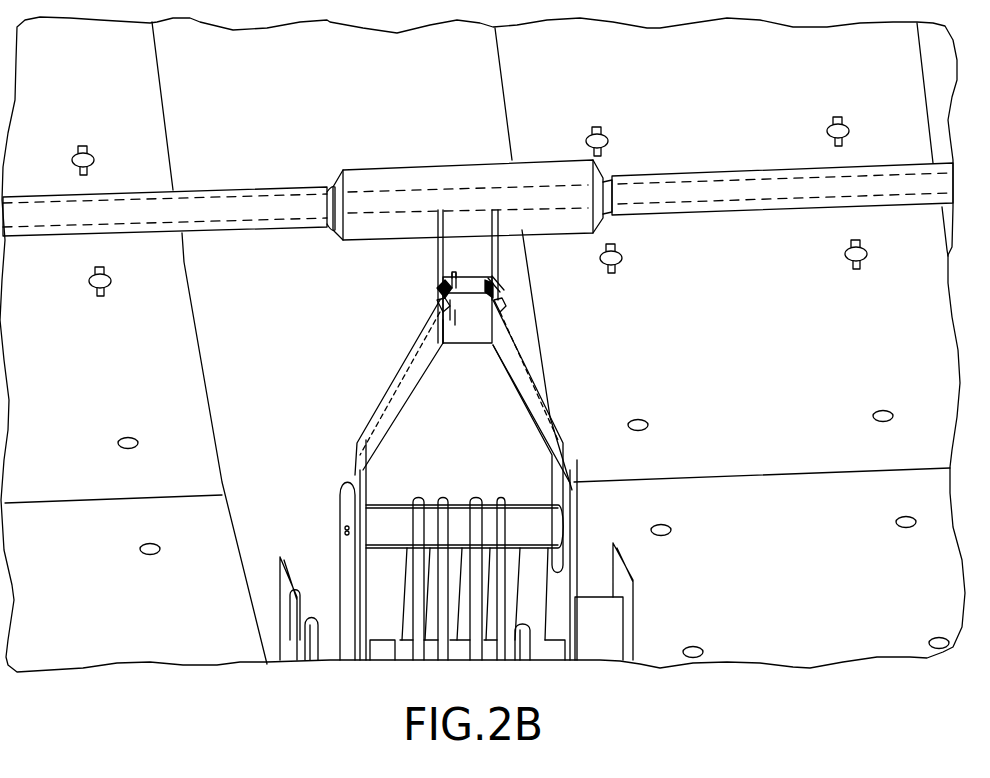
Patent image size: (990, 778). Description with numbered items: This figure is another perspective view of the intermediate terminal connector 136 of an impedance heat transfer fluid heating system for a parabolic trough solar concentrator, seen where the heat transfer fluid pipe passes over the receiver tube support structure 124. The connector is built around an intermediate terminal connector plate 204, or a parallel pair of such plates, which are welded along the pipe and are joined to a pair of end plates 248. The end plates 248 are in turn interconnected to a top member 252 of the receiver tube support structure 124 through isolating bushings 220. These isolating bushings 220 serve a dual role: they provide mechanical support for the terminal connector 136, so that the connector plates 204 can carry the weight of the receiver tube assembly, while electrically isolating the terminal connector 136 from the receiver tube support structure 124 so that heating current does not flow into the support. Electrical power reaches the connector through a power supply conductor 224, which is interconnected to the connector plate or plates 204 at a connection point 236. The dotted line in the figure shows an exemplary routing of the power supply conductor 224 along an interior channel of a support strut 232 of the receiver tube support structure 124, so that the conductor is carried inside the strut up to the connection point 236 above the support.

The receiver tube support structure 124 is at (457, 435).
The intermediate terminal connector 136 is at (499, 276).
The intermediate terminal connector plate 204 is at (495, 258).
The isolating bushings 220 is at (437, 305).
The power supply conductor 224 is at (367, 440).
The support strut 232 is at (383, 402).
The connection point 236 is at (437, 290).
The end plates 248 is at (437, 272).
The top member 252 is at (478, 333).